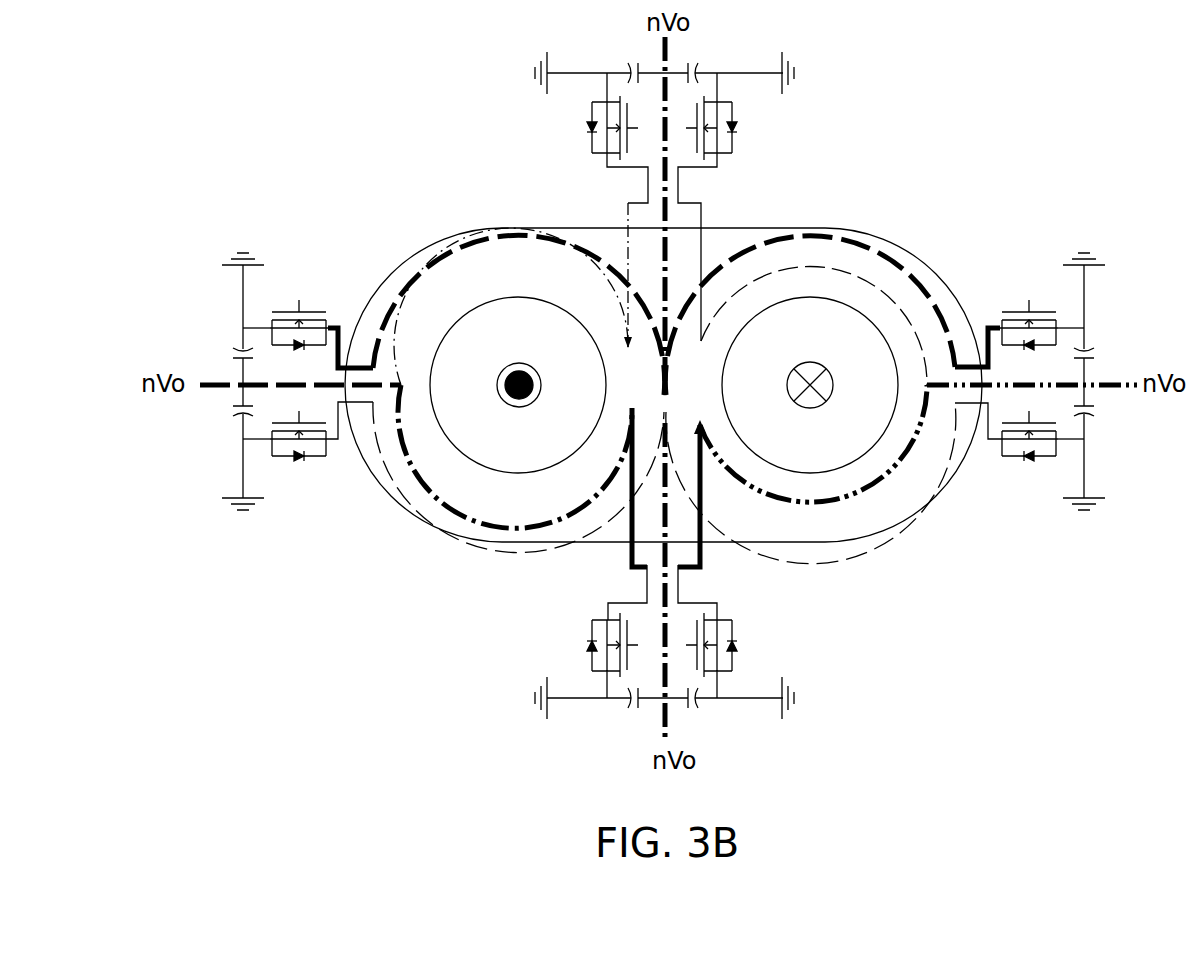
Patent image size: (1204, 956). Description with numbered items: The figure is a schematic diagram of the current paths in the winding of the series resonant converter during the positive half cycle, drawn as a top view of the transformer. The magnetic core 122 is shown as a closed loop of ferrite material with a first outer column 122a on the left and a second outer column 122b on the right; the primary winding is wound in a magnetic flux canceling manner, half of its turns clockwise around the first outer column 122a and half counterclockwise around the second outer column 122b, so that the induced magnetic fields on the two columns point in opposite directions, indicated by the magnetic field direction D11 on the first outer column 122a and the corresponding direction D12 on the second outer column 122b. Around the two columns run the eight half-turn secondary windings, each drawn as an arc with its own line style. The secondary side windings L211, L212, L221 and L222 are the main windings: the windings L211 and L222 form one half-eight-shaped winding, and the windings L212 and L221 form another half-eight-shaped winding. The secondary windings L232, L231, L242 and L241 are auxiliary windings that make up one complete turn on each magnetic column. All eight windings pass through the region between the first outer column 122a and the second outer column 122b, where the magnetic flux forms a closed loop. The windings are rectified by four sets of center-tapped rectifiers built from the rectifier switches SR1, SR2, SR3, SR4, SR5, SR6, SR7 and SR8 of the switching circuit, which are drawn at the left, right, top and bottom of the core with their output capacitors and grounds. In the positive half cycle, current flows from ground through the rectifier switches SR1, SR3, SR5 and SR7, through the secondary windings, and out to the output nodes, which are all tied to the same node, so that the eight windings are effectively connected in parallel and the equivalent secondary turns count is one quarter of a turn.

The magnetic core 122 is at (457, 230).
The first outer column 122a is at (518, 385).
The second outer column 122b is at (810, 385).
The magnetic field direction D11 is at (546, 385).
The second flux direction D12 is at (837, 385).
The secondary side winding L211 is at (497, 240).
The secondary side winding L212 is at (426, 498).
The secondary side winding L221 is at (900, 266).
The secondary side winding L222 is at (853, 525).
The secondary side winding L231 is at (517, 503).
The secondary side winding L232 is at (521, 267).
The secondary side winding L241 is at (808, 504).
The secondary side winding L242 is at (803, 268).
The rectifier switch SR1 is at (285, 309).
The rectifier switch SR2 is at (285, 452).
The rectifier switch SR3 is at (1042, 309).
The rectifier switch SR4 is at (1042, 452).
The rectifier switch SR5 is at (584, 655).
The rectifier switch SR6 is at (584, 116).
The rectifier switch SR7 is at (743, 655).
The rectifier switch SR8 is at (743, 116).